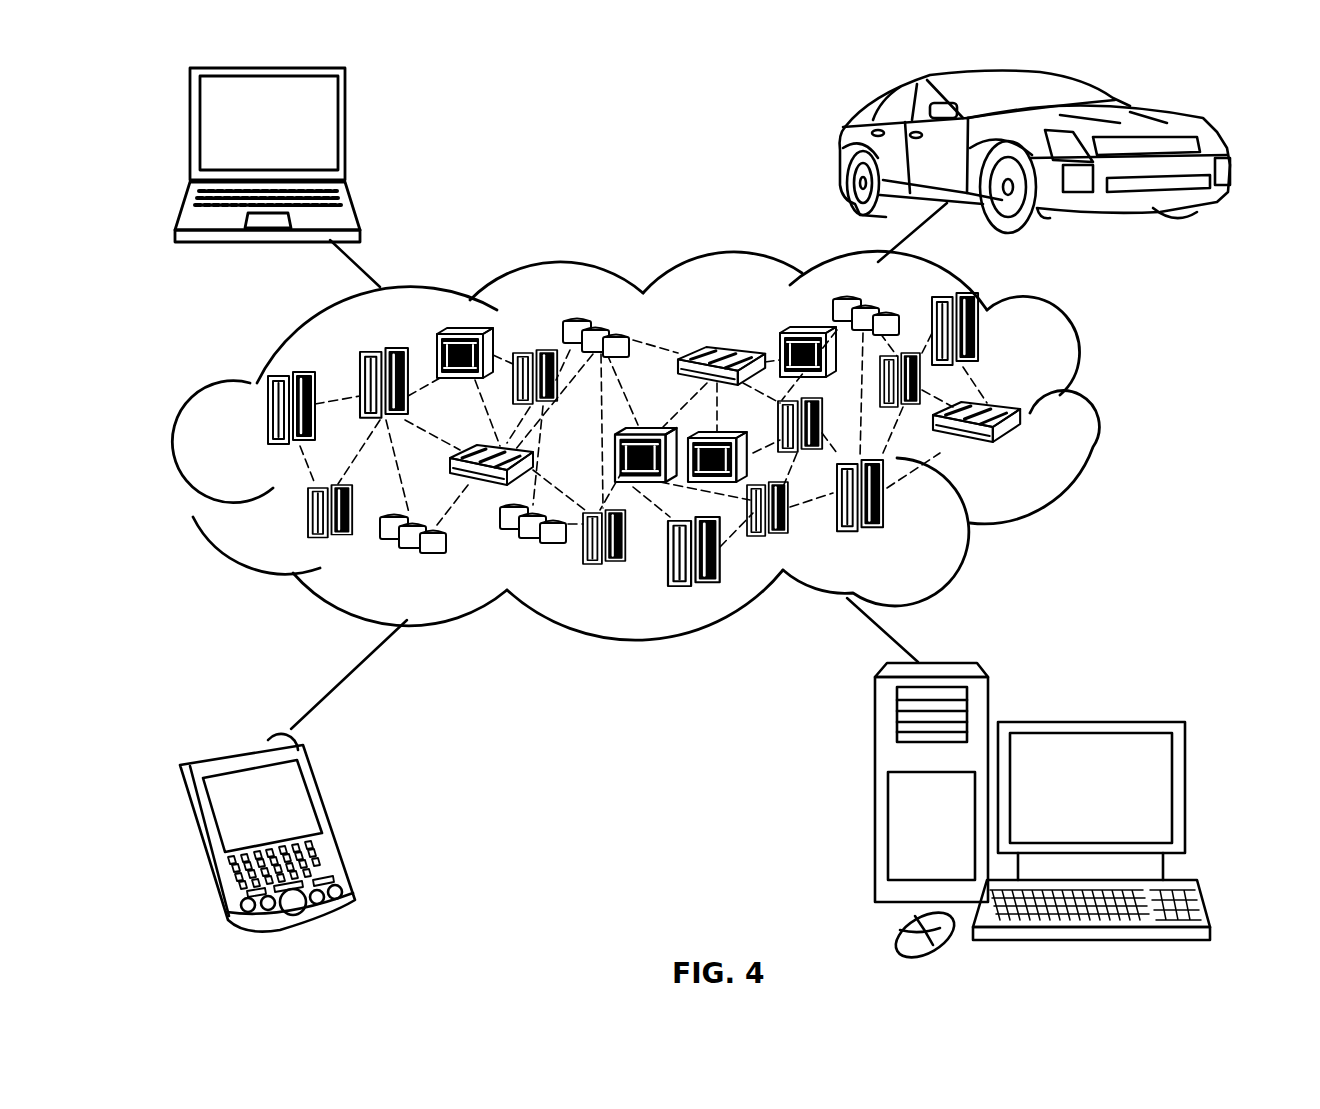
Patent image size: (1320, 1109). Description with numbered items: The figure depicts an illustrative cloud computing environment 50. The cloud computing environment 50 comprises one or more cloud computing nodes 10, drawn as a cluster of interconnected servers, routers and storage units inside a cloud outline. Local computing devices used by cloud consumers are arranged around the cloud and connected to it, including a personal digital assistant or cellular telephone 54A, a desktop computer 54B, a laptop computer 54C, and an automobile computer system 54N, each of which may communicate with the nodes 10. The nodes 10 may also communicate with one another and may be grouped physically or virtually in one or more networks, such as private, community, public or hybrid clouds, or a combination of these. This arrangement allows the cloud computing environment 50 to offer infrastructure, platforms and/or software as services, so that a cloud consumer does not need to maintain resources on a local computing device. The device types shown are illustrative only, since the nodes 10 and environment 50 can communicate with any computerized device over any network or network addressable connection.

The cloud computing environment 50 is at (1088, 417).
The cloud computing node 10 is at (1040, 453).
The personal digital assistant or cellular telephone 54A is at (330, 817).
The desktop computer 54B is at (1087, 722).
The laptop computer 54C is at (345, 133).
The automobile computer system 54N is at (842, 149).